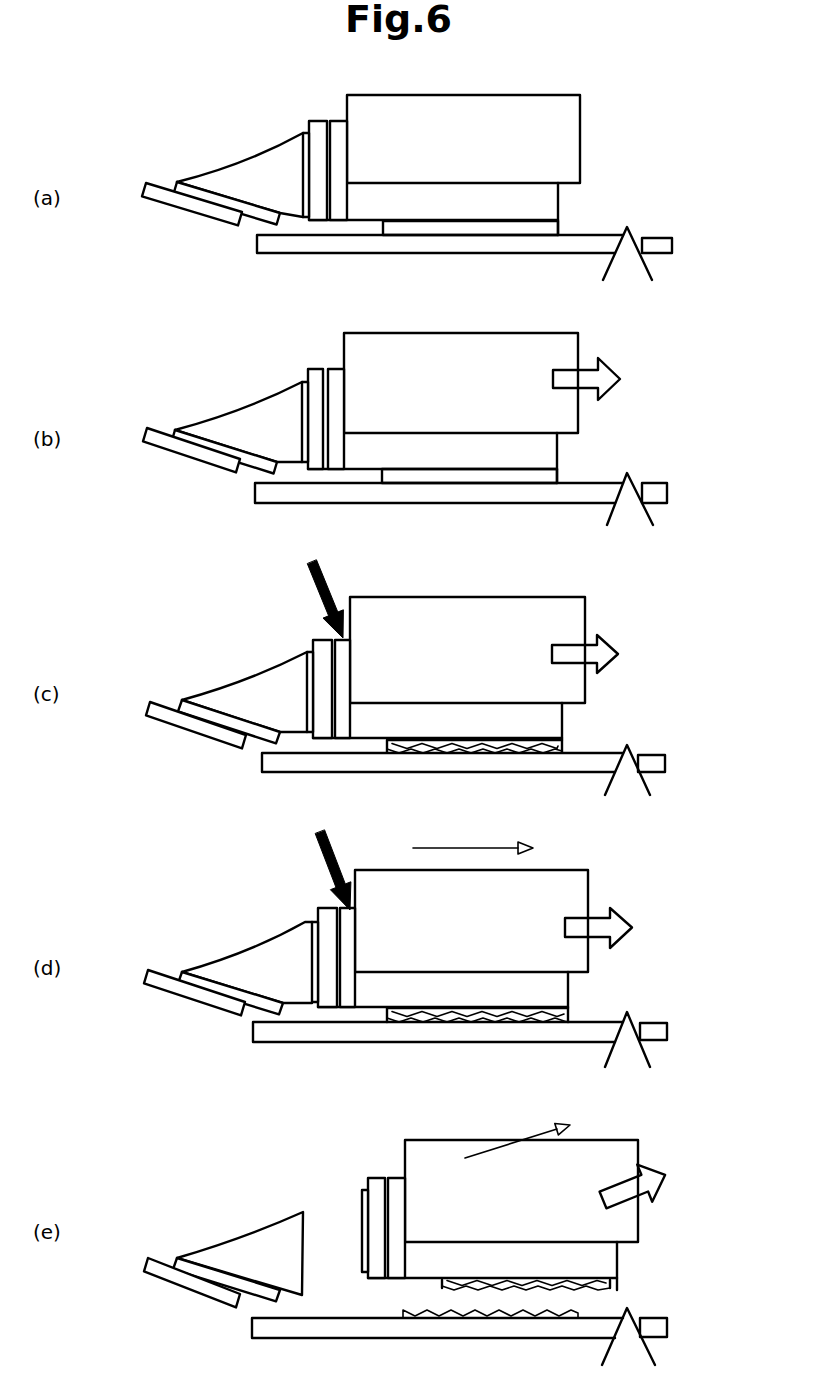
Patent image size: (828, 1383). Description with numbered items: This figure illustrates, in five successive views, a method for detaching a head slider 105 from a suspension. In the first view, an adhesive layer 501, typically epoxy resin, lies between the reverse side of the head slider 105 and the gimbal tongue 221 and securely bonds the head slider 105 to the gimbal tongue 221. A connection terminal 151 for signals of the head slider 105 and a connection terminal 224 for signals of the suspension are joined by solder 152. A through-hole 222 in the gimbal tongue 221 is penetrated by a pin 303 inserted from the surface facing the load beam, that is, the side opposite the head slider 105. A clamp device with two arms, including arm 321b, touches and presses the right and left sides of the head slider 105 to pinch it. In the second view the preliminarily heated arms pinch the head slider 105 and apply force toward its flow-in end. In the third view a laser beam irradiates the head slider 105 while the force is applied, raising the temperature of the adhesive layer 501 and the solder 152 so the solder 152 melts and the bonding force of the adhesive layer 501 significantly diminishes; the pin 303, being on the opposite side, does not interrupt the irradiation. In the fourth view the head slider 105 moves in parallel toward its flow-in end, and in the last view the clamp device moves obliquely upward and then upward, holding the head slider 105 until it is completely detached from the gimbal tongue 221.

The connection terminal 151 is at (303, 133).
The solder 152 is at (228, 162).
The arm 321b is at (580, 138).
The head slider 105 is at (558, 205).
The through-hole 222 is at (633, 227).
The connection terminal 224 is at (243, 225).
The gimbal tongue 221 is at (318, 254).
The adhesive layer 501 is at (371, 236).
The pin 303 is at (607, 262).